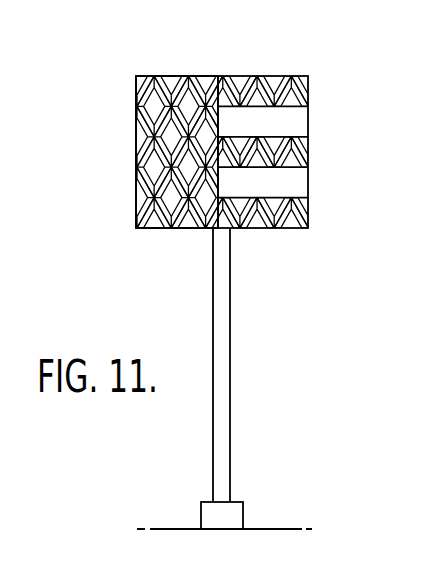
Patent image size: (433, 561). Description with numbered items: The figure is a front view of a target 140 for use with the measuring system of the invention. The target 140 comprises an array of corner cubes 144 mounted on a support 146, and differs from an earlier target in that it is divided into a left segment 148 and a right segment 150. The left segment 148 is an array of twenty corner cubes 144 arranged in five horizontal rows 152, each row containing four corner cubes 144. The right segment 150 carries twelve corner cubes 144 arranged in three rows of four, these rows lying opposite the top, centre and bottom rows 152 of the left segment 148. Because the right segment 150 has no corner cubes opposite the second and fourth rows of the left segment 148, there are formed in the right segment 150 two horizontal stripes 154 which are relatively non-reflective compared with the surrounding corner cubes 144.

The target 140 is at (290, 229).
The corner cubes 144 is at (223, 77).
The support 146 is at (231, 394).
The left segment 148 is at (137, 76).
The right segment 150 is at (308, 74).
The horizontal rows 152 is at (136, 185).
The horizontal stripes 154 is at (308, 182).